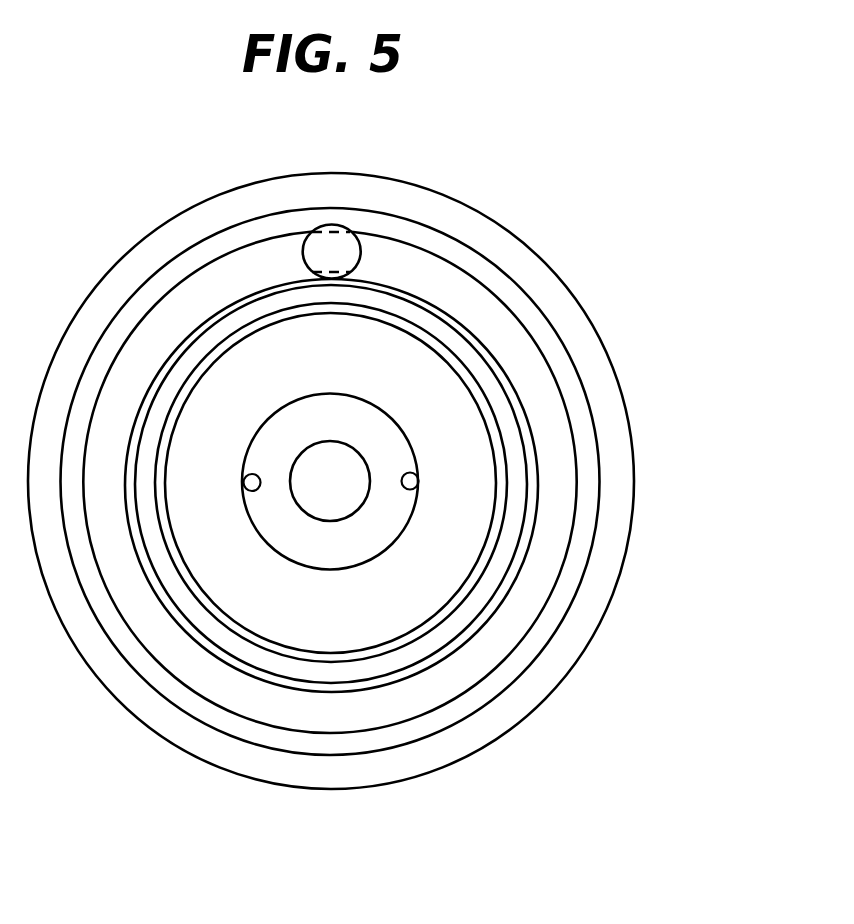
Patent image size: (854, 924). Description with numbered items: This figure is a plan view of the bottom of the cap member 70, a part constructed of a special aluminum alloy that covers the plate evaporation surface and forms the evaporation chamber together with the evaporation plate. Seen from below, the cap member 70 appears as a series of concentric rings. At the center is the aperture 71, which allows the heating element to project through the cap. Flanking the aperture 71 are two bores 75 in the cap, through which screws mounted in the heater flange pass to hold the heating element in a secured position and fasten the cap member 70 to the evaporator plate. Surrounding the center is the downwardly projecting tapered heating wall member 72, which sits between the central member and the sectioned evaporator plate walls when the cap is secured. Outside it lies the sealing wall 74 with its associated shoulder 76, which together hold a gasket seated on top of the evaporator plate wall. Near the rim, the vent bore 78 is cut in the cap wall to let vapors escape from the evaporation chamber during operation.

The cap member 70 is at (646, 470).
The aperture 71 is at (348, 467).
The heating wall member 72 is at (435, 640).
The sealing wall 74 is at (520, 660).
The bores 75 is at (413, 480).
The shoulder 76 is at (590, 612).
The vent bore 78 is at (343, 247).